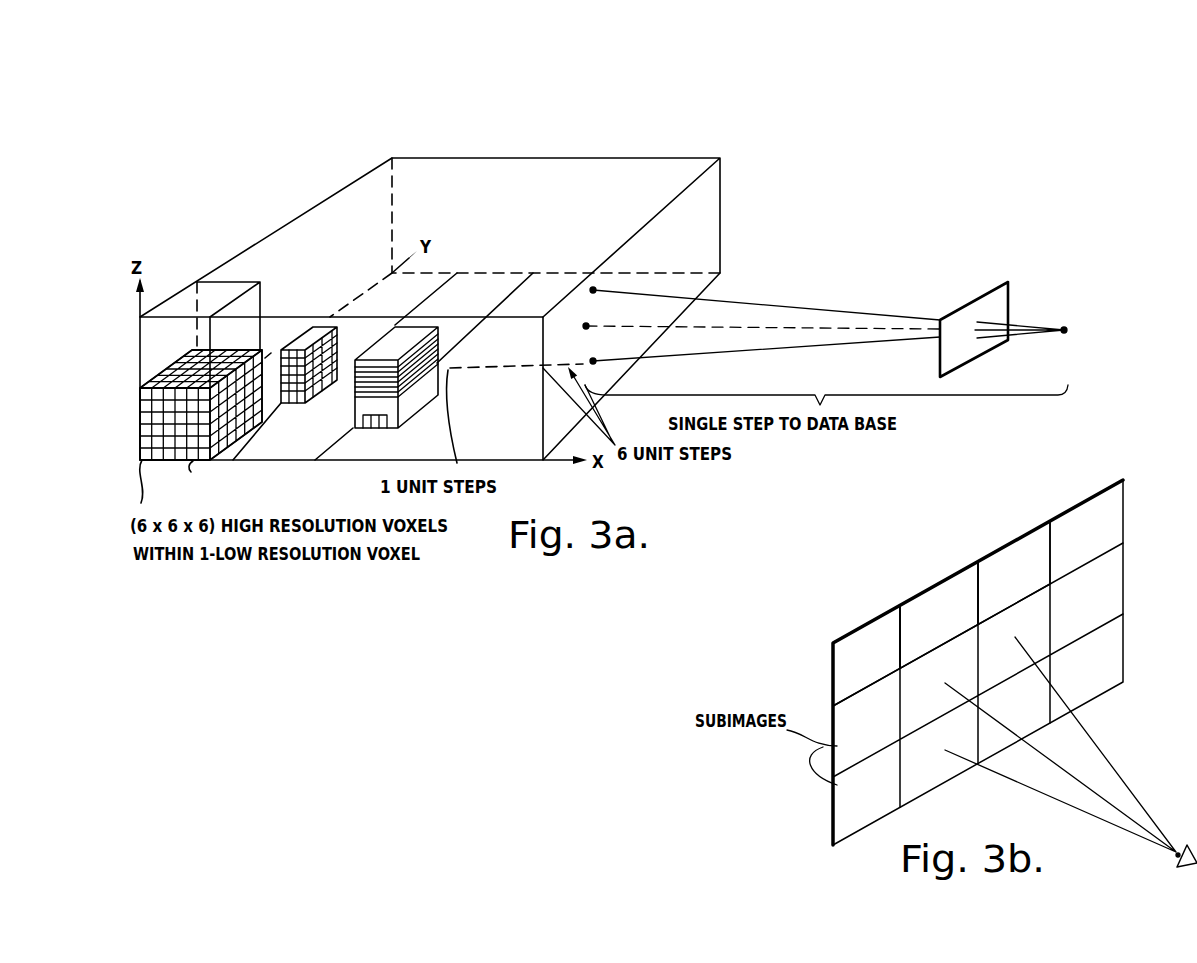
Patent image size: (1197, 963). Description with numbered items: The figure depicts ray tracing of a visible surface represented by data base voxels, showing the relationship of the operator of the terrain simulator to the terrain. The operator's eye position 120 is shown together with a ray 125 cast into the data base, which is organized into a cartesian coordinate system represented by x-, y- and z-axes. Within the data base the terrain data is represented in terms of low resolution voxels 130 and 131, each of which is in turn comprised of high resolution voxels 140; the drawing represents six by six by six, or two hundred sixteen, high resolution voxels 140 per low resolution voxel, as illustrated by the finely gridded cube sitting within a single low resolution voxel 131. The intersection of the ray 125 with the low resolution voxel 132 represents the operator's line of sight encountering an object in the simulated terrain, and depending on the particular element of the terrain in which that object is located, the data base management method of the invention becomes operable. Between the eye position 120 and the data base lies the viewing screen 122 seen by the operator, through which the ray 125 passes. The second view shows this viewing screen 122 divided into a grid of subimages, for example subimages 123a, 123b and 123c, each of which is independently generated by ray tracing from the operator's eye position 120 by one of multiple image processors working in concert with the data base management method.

In FIG. 3A, the operator's eye position 120 is at (1066, 330).
In FIG. 3A, the viewing screen 122 is at (1008, 283).
In FIG. 3B, the viewing screen 122 is at (1123, 480).
In FIG. 3B, the subimage 123a is at (866, 655).
In FIG. 3B, the subimage 123b is at (939, 615).
In FIG. 3B, the subimage 123c is at (1014, 573).
In FIG. 3A, the ray 125 is at (801, 350).
In FIG. 3A, the low resolution voxel 130 is at (277, 343).
In FIG. 3A, the low resolution voxel 131 is at (262, 296).
In FIG. 3A, the low resolution voxel 132 is at (447, 367).
In FIG. 3A, the high resolution voxels 140 is at (201, 423).